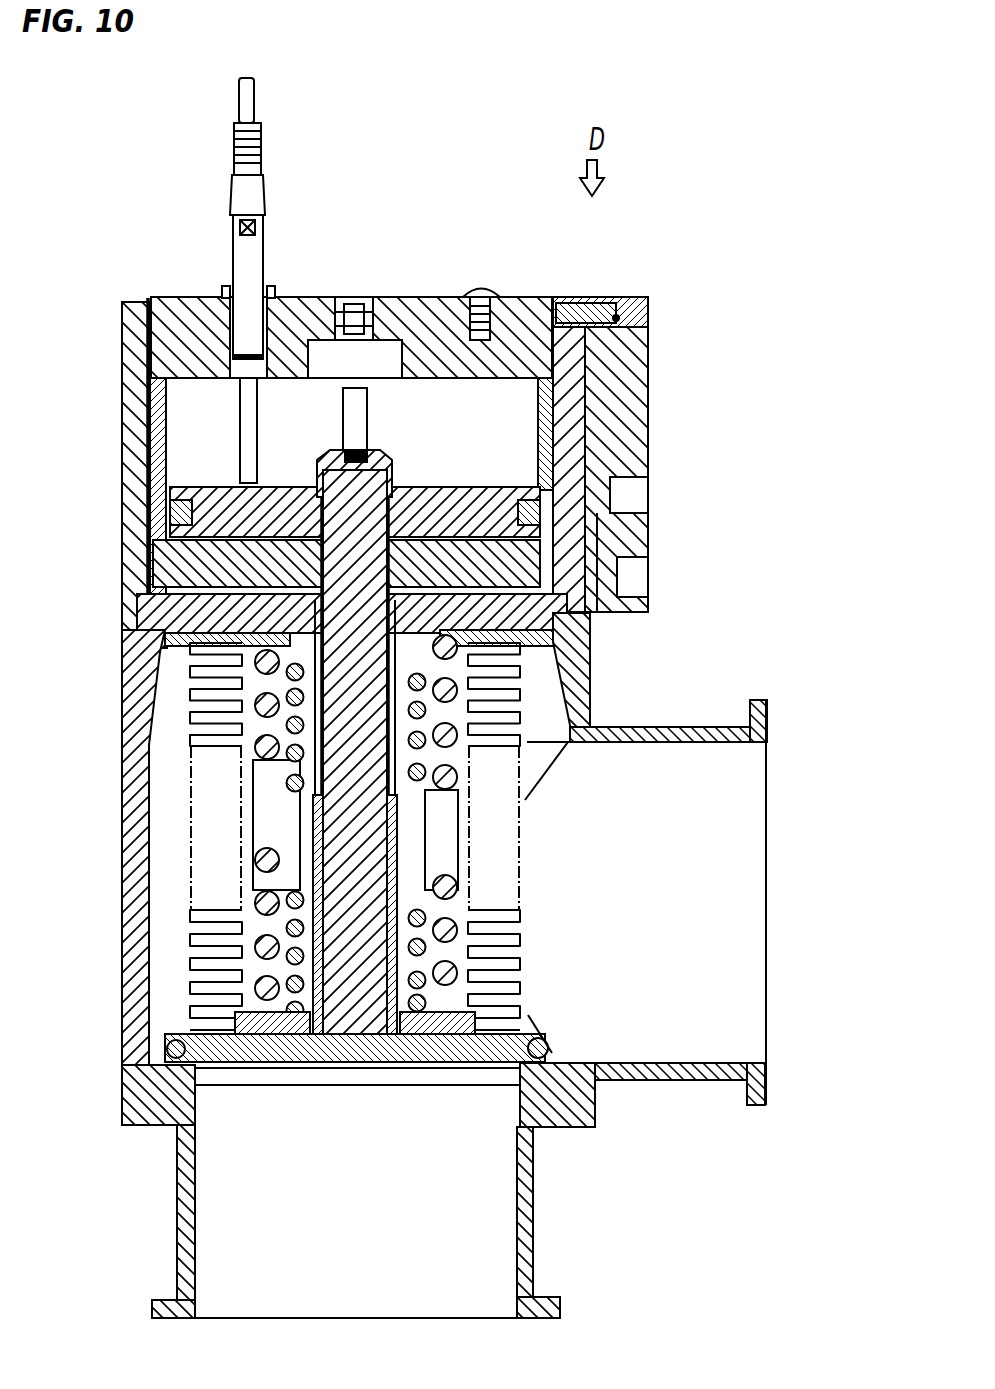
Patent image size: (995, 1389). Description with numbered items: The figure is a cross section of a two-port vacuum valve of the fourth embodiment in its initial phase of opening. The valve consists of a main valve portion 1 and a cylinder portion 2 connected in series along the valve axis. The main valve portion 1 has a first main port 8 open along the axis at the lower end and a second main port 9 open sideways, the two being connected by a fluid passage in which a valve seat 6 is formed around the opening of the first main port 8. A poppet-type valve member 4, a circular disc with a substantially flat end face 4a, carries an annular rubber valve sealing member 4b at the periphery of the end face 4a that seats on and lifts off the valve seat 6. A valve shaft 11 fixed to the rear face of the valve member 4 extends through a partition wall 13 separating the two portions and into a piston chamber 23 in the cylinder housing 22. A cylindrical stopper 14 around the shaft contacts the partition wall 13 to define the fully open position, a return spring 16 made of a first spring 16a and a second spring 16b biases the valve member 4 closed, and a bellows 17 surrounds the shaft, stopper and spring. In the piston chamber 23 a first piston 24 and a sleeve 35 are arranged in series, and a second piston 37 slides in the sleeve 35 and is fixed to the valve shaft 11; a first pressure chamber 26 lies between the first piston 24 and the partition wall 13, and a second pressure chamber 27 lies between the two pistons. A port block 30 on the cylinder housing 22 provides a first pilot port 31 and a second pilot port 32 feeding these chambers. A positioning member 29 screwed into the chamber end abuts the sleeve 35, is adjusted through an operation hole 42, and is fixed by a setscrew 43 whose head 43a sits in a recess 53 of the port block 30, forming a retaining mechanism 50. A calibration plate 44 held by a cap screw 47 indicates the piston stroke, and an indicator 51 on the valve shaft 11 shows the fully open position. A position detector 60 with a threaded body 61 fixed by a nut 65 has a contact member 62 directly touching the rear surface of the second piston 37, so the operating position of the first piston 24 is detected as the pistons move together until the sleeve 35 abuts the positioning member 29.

The main valve portion 1 is at (90, 1012).
The cylinder portion 2 is at (90, 318).
The valve member 4 is at (255, 1045).
The end face 4a is at (345, 1045).
The valve sealing member 4b is at (178, 1062).
The valve seat 6 is at (545, 1060).
The first main port 8 is at (366, 1285).
The second main port 9 is at (742, 872).
The valve shaft 11 is at (260, 890).
The partition wall 13 is at (200, 628).
The stopper 14 is at (412, 800).
The return spring 16 is at (229, 816).
The first spring 16a is at (260, 742).
The second spring 16b is at (300, 782).
The bellows 17 is at (520, 958).
The cylinder housing 22 is at (135, 306).
The piston chamber 23 is at (150, 400).
The first piston 24 is at (190, 562).
The first pressure chamber 26 is at (573, 620).
The second pressure chamber 27 is at (585, 565).
The positioning member 29 is at (412, 300).
The port block 30 is at (615, 398).
The first pilot port 31 is at (630, 566).
The second pilot port 32 is at (630, 496).
The sleeve 35 is at (228, 500).
The second piston 37 is at (190, 520).
The operation hole 42 is at (350, 300).
The setscrew 43 is at (578, 300).
The head 43a is at (607, 302).
The calibration plate 44 is at (536, 298).
The cap screw 47 is at (480, 286).
The retaining mechanism 50 is at (616, 240).
The indicator 51 is at (355, 398).
The recess 53 is at (645, 346).
The position detector 60 is at (210, 154).
The body 61 is at (245, 262).
The contact member 62 is at (243, 432).
The nut 65 is at (272, 296).